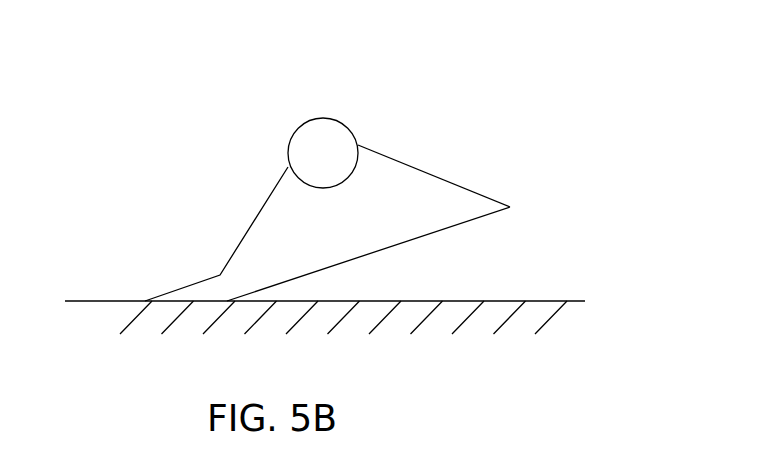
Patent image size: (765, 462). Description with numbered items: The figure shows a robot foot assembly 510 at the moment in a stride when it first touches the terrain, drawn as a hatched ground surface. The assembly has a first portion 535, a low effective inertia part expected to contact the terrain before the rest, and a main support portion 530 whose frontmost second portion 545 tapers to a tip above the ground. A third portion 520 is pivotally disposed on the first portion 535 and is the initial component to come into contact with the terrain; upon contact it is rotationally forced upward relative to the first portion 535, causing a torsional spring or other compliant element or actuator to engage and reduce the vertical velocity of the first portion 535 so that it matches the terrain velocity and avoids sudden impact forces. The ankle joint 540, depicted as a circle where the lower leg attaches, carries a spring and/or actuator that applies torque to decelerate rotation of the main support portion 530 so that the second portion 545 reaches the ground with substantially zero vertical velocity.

The foot assembly 510 is at (505, 105).
The third portion 520 is at (178, 298).
The main support portion 530 is at (375, 165).
The first portion 535 is at (221, 286).
The ankle joint 540 is at (323, 119).
The second portion 545 is at (485, 202).